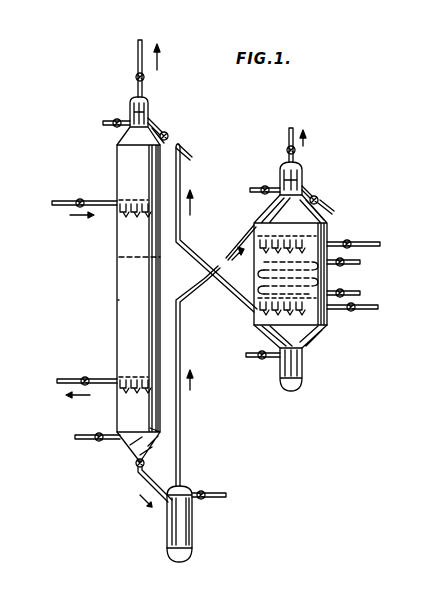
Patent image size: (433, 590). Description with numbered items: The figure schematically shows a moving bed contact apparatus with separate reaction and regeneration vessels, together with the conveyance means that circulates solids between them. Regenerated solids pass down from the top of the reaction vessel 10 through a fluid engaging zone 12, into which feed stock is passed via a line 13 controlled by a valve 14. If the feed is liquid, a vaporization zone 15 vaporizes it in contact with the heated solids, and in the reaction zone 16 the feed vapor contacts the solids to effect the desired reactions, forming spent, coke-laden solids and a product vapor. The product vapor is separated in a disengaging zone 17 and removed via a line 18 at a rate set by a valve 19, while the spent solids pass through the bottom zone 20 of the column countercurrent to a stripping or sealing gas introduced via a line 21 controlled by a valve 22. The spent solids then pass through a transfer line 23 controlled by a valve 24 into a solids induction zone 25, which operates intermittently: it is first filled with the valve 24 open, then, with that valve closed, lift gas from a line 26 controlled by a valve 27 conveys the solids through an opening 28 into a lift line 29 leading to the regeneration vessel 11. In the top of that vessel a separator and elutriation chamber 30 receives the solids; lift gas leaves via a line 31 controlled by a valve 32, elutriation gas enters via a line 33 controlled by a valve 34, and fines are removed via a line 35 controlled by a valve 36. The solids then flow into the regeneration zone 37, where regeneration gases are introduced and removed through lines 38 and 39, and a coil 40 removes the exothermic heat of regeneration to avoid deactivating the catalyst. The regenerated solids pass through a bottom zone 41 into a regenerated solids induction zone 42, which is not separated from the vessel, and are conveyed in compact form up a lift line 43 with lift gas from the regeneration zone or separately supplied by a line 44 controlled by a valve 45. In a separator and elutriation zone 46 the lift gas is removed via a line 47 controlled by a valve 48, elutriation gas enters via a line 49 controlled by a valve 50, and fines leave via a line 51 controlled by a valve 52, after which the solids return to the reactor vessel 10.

The reaction vessel 10 is at (122, 160).
The regeneration vessel 11 is at (330, 236).
The fluid engaging zone 12 is at (118, 200).
The feed line 13 is at (52, 201).
The valve 14 is at (62, 210).
The vaporization zone 15 is at (135, 232).
The reaction zone 16 is at (137, 298).
The disengaging zone 17 is at (118, 380).
The product vapor line 18 is at (64, 392).
The valve 19 is at (82, 380).
The bottom zone 20 is at (128, 415).
The stripping gas line 21 is at (78, 441).
The valve 22 is at (100, 442).
The transfer line 23 is at (141, 483).
The valve 24 is at (136, 468).
The solids induction zone 25 is at (168, 528).
The lift gas line 26 is at (204, 492).
The valve 27 is at (206, 500).
The opening 28 is at (178, 563).
The lift line 29 is at (181, 462).
The separator and elutriation chamber 30 is at (302, 178).
The lift gas removal line 31 is at (296, 160).
The valve 32 is at (288, 150).
The elutriation gas line 33 is at (251, 189).
The valve 34 is at (264, 186).
The fines removal line 35 is at (320, 196).
The valve 36 is at (320, 201).
The regeneration zone 37 is at (326, 280).
The regeneration gas line 38 is at (380, 244).
The regeneration gas line 39 is at (378, 306).
The coil 40 is at (259, 273).
The bottom zone 41 is at (306, 345).
The regenerated solids induction zone 42 is at (300, 370).
The lift line 43 is at (230, 304).
The lift gas line 44 is at (250, 357).
The valve 45 is at (262, 359).
The separator and elutriation zone 46 is at (128, 100).
The lift gas removal line 47 is at (144, 40).
The valve 48 is at (136, 77).
The elutriation gas line 49 is at (110, 125).
The valve 50 is at (104, 123).
The fines removal line 51 is at (154, 131).
The valve 52 is at (170, 136).